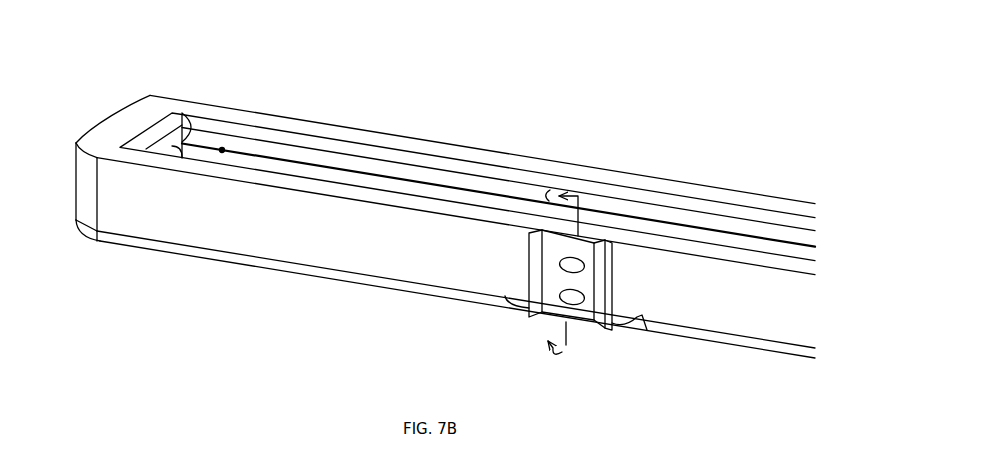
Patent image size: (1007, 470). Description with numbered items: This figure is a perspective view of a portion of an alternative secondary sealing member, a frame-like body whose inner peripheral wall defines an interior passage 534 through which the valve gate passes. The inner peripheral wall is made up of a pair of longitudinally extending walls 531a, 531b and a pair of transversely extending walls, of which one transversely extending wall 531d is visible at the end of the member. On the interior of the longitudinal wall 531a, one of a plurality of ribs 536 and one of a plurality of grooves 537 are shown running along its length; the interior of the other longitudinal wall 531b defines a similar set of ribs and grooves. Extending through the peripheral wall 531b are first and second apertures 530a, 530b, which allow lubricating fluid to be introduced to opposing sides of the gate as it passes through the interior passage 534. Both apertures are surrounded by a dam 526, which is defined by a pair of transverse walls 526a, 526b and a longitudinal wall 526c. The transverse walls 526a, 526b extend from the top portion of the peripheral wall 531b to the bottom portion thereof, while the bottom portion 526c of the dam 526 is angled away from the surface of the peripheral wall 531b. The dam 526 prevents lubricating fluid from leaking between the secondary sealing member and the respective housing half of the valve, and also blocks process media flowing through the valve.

The longitudinally extending wall 531a is at (443, 138).
The longitudinally extending wall 531b is at (302, 240).
The transversely extending wall 531d is at (110, 118).
The interior passage 534 is at (222, 150).
The rib 536 is at (275, 148).
The groove 537 is at (680, 226).
The dam 526 is at (576, 291).
The transverse wall 526a is at (522, 274).
The transverse wall 526b is at (614, 283).
The longitudinal wall 526c is at (648, 331).
The first aperture 530a is at (570, 268).
The second aperture 530b is at (573, 300).